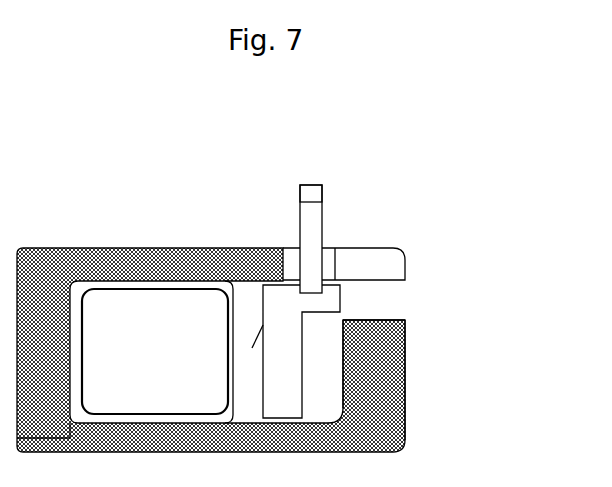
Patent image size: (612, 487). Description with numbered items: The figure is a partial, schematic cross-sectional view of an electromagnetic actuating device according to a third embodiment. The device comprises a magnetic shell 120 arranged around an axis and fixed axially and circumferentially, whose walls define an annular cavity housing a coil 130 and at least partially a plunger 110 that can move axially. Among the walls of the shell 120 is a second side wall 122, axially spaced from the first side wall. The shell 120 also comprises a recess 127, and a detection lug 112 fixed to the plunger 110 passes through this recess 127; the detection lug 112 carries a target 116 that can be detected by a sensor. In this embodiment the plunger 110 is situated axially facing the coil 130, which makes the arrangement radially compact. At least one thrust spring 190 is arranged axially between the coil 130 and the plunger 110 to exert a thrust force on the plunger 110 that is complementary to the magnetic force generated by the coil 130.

The plunger 110 is at (328, 297).
The detection lug 112 is at (323, 215).
The target 116 is at (307, 186).
The magnetic shell 120 is at (405, 430).
The second side wall 122 is at (345, 377).
The recess 127 is at (290, 283).
The coil 130 is at (137, 323).
The thrust spring 190 is at (252, 348).